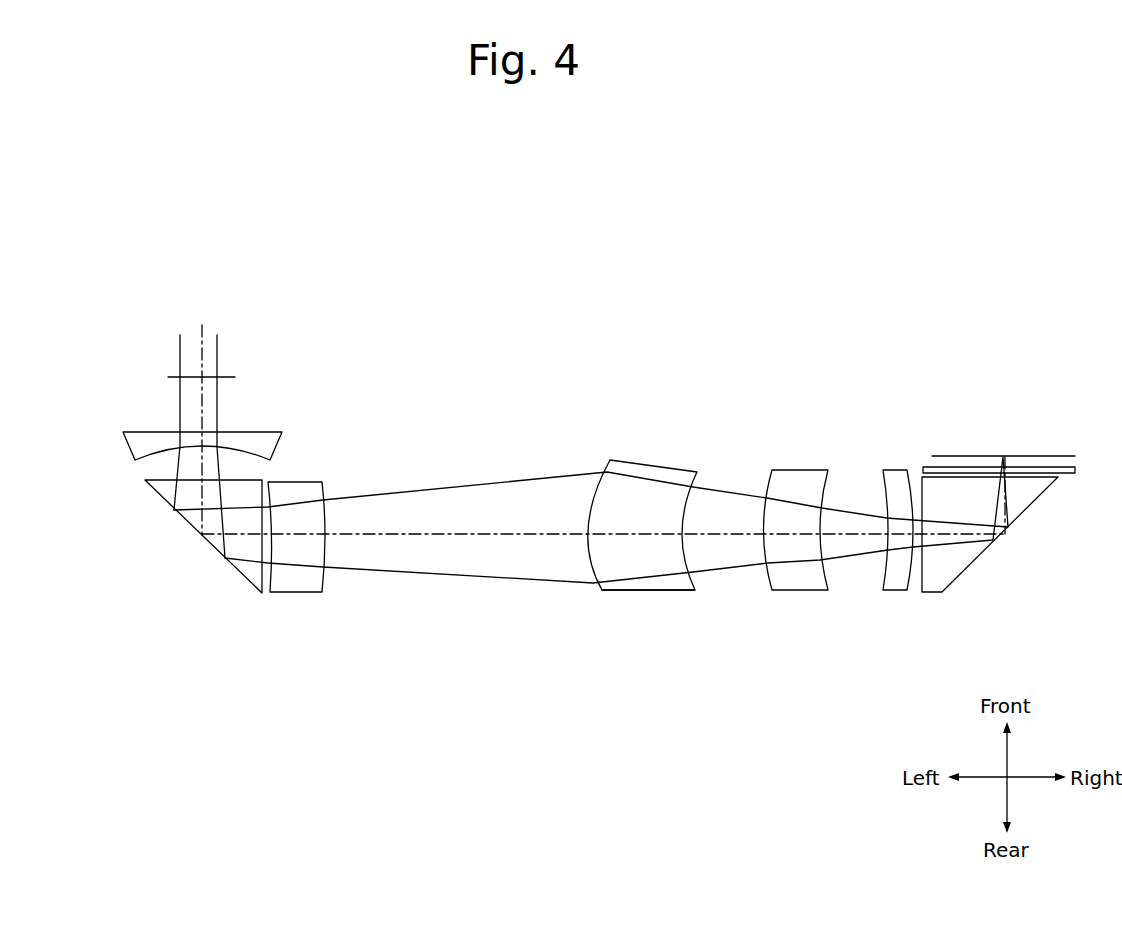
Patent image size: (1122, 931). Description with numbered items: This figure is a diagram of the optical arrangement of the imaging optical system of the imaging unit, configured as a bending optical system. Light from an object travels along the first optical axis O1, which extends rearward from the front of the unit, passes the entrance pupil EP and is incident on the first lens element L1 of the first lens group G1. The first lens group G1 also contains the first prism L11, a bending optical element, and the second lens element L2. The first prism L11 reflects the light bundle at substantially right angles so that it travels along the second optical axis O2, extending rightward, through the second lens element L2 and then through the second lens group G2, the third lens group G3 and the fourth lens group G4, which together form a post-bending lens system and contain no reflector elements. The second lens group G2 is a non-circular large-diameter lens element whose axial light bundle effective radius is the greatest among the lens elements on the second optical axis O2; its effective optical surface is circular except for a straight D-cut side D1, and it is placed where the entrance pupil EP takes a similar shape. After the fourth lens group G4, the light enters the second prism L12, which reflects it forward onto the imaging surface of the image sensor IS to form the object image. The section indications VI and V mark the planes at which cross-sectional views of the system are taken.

The entrance pupil EP is at (173, 377).
The section line VI- VI is at (198, 320).
The first optical axis O1 is at (203, 413).
The first lens group G1 is at (396, 394).
The first lens element L1 is at (257, 440).
The first prism L11 is at (250, 493).
The second lens element L2 is at (307, 493).
The second optical axis O2 is at (517, 533).
The section line V- V is at (556, 533).
The second lens group G2 is at (650, 587).
The D-cut side D1 is at (673, 590).
The third lens group G3 is at (802, 580).
The fourth lens group G4 is at (893, 580).
The second prism L12 is at (967, 558).
The image sensor IS is at (1027, 453).